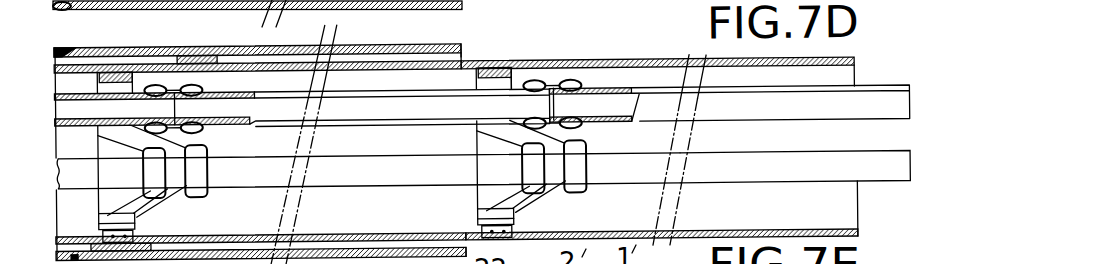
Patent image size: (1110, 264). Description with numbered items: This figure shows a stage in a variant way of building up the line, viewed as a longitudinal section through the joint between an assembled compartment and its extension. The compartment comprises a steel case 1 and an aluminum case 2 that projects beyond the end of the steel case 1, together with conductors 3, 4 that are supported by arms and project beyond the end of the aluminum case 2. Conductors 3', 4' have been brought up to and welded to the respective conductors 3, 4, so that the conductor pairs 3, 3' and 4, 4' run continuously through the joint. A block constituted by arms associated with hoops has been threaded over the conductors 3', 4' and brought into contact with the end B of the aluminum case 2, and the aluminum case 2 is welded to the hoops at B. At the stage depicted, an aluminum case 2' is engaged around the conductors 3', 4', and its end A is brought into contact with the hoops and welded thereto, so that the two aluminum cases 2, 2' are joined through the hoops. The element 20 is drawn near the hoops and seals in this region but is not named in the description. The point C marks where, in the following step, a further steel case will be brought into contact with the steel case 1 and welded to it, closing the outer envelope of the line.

The steel case 1 is at (217, 49).
The aluminum case 2 is at (260, 131).
The aluminum case 2' is at (659, 125).
The conductor 3 is at (302, 125).
The conductor 3' is at (729, 117).
The conductor 4 is at (369, 157).
The conductor 4' is at (795, 153).
The roller ring 20 is at (552, 77).
The end of aluminum case 2' A is at (534, 47).
The end of aluminum case 2 B is at (501, 57).
The contact point of steel cases C is at (469, 52).